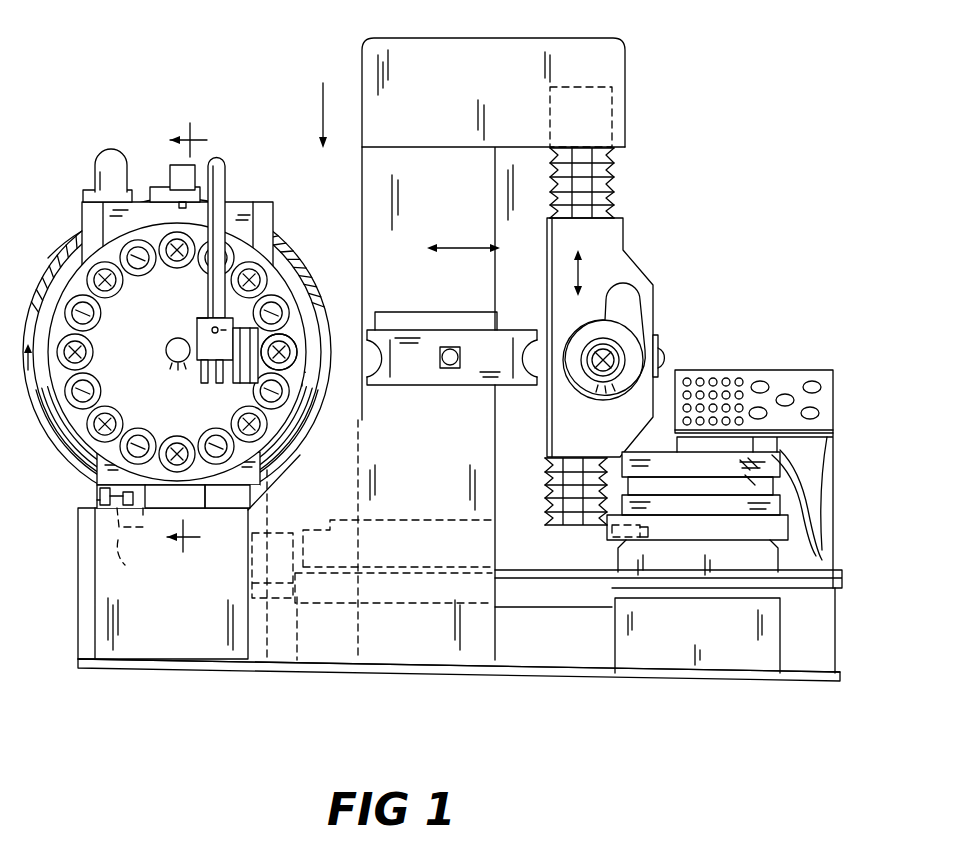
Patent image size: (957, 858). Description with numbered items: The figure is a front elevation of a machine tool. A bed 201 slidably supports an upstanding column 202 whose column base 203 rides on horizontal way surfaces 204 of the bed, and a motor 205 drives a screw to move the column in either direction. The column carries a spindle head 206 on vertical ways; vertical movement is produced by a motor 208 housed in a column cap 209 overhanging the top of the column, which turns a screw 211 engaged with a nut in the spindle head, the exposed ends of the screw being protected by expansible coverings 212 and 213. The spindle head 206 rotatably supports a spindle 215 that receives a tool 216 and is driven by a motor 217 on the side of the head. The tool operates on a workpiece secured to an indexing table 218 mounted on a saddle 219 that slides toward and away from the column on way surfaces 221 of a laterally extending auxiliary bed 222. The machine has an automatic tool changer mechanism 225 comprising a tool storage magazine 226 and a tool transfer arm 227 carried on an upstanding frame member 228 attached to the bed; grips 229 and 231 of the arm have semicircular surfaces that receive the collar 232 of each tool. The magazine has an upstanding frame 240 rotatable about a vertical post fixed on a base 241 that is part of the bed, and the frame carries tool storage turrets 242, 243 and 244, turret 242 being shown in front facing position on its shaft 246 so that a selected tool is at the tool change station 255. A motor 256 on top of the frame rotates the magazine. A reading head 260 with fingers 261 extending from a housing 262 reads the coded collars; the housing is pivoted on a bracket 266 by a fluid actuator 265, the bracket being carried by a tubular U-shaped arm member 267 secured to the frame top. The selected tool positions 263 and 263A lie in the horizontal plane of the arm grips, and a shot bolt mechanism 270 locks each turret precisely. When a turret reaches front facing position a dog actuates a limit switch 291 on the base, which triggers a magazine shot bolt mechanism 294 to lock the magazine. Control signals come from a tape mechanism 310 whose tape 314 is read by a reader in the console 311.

The bed 201 is at (459, 685).
The column 202 is at (372, 168).
The column base 203 is at (518, 556).
The horizontal way surfaces 204 is at (305, 554).
The motor 205 is at (278, 548).
The spindle head 206 is at (612, 240).
The motor 208 is at (600, 127).
The column cap 209 is at (425, 52).
The screw 211 is at (612, 166).
The expansible covering 212 is at (608, 187).
The expansible covering 213 is at (595, 470).
The spindle 215 is at (615, 348).
The tool 216 is at (78, 266).
The motor 217 is at (662, 358).
The indexing table 218 is at (715, 473).
The saddle 219 is at (720, 536).
The way surfaces 221 is at (642, 538).
The auxiliary bed 222 is at (665, 664).
The tool changer mechanism 225 is at (323, 104).
The tool storage magazine 226 is at (76, 193).
The tool transfer arm 227 is at (428, 337).
The frame member 228 is at (458, 660).
The grip 229 is at (384, 328).
The grip 231 is at (517, 378).
The collar 232 is at (598, 382).
The frame 240 is at (272, 211).
The base 241 is at (137, 648).
The tool storage turret 242 is at (281, 287).
The tool storage turret 243 is at (86, 455).
The tool storage turret 244 is at (300, 262).
The shaft 246 is at (167, 343).
The tool change station 255 is at (355, 355).
The motor 256 is at (112, 158).
The reading head 260 is at (182, 325).
The fingers 261 is at (262, 350).
The housing 262 is at (247, 380).
The selected tool position 263 is at (300, 455).
The selected tool position 263A is at (34, 385).
The fluid actuator 265 is at (190, 390).
The bracket 266 is at (196, 312).
The tubular U-shaped arm member 267 is at (220, 176).
The shot bolt mechanism 270 is at (203, 158).
The limit switch 291 is at (100, 498).
The magazine shot bolt mechanism 294 is at (167, 542).
The tape mechanism 310 is at (772, 345).
The console 311 is at (785, 375).
The tape 314 is at (810, 552).